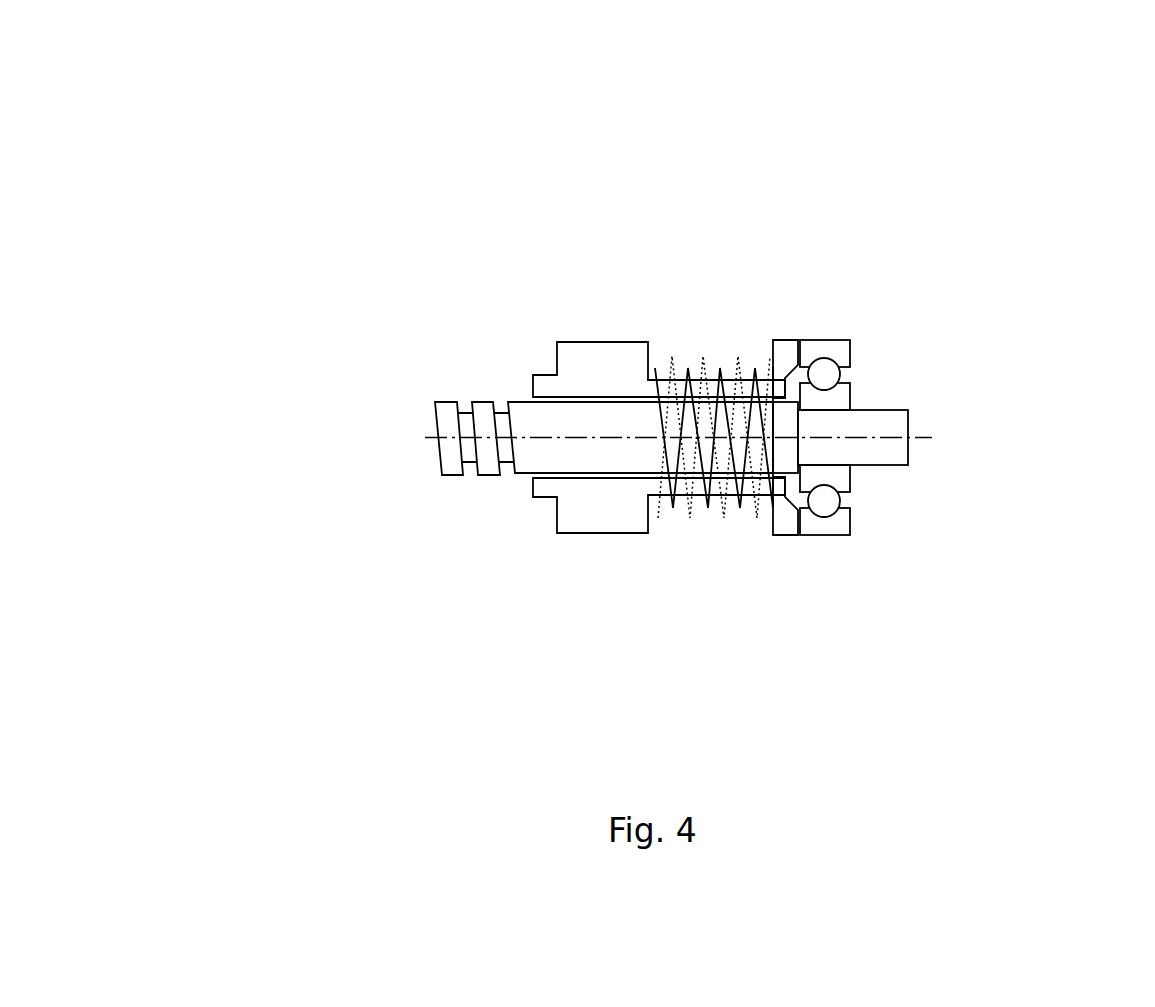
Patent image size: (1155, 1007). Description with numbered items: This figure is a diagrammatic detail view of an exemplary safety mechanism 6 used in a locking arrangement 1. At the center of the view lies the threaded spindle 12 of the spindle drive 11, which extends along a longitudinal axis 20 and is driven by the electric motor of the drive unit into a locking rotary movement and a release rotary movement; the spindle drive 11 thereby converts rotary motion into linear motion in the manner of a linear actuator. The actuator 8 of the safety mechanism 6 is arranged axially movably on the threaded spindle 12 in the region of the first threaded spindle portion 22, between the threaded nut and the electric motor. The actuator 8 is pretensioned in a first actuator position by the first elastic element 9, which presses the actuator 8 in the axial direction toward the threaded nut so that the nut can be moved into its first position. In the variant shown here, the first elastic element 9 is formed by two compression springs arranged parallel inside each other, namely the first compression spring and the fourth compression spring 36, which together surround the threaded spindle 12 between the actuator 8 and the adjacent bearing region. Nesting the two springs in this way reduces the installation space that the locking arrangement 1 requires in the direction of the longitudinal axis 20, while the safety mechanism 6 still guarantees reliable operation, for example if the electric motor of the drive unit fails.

The locking arrangement 1 is at (205, 132).
The safety mechanism 6 is at (659, 412).
The actuator 8 is at (632, 382).
The first elastic element 9 is at (690, 372).
The fourth compression spring 36 is at (738, 363).
The spindle drive 11 is at (645, 547).
The threaded spindle 12 is at (676, 542).
The first threaded spindle portion 22 is at (627, 460).
The longitudinal axis 20 is at (880, 433).